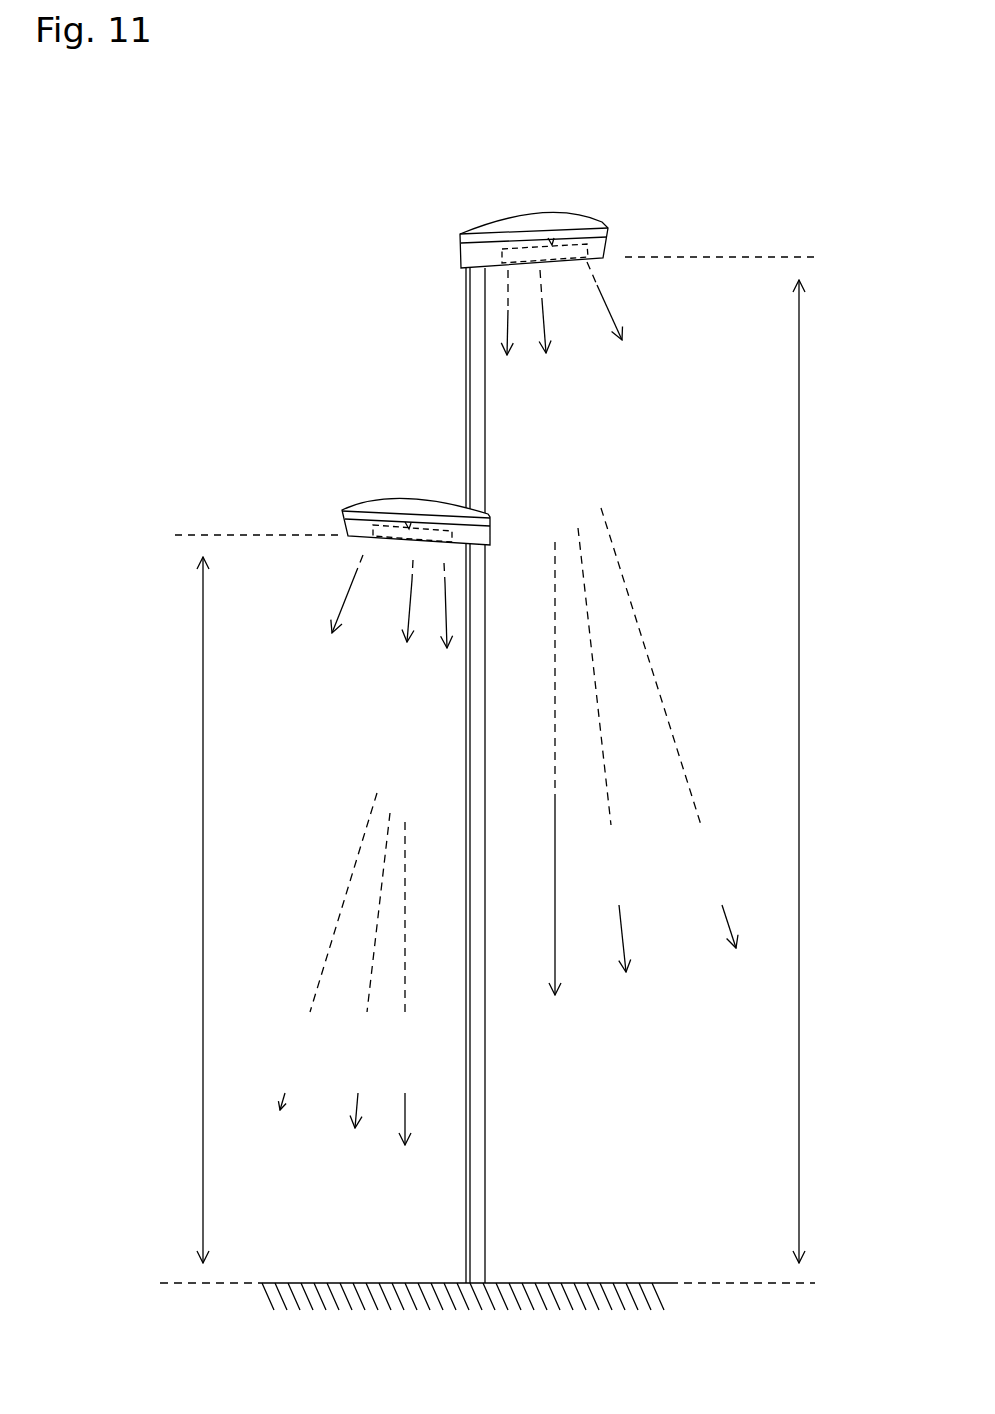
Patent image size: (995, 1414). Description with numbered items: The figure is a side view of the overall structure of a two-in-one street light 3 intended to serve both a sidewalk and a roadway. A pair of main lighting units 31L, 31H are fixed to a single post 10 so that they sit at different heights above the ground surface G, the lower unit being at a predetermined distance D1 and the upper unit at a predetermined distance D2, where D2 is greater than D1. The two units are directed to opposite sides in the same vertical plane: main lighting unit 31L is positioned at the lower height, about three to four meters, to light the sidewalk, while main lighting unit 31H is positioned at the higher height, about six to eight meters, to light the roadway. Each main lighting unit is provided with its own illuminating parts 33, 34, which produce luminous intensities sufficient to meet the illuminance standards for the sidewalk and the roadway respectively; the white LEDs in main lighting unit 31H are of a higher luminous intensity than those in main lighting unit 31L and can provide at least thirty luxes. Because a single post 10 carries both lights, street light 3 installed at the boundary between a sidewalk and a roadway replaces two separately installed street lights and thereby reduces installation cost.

The two-in-one street light 3 is at (503, 718).
The pole 10 is at (487, 1138).
The main lighting unit 31H is at (598, 209).
The main lighting unit 31L is at (343, 487).
The light source 33 is at (480, 353).
The light source 34 is at (548, 246).
The predetermined distance D1 is at (203, 790).
The predetermined distance D2 is at (800, 583).
The ground surface G is at (647, 1283).